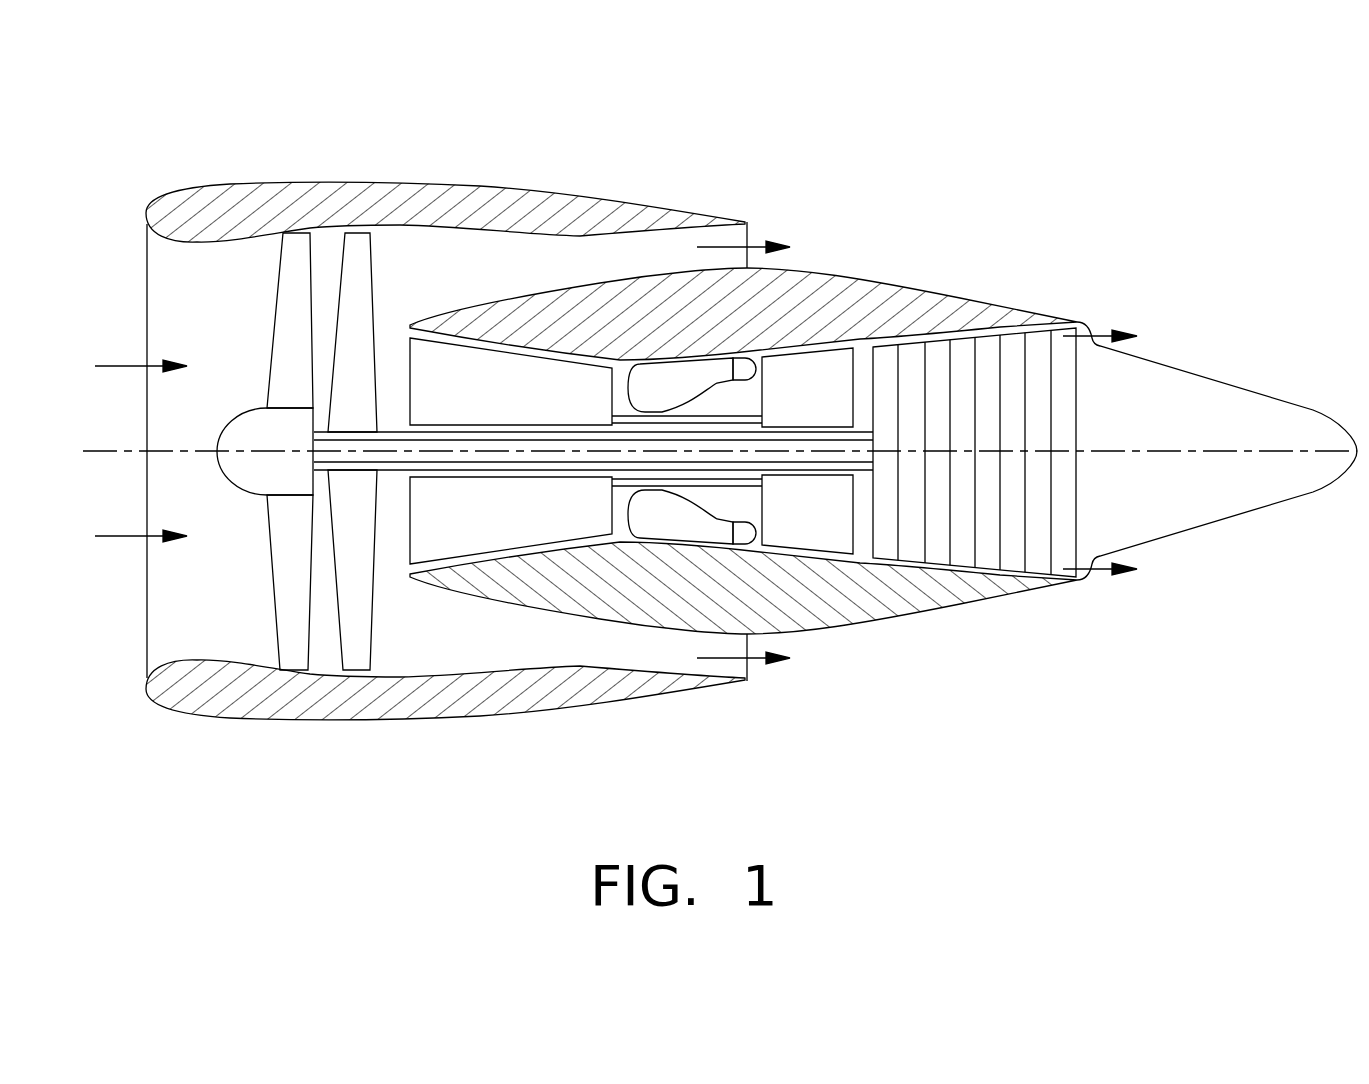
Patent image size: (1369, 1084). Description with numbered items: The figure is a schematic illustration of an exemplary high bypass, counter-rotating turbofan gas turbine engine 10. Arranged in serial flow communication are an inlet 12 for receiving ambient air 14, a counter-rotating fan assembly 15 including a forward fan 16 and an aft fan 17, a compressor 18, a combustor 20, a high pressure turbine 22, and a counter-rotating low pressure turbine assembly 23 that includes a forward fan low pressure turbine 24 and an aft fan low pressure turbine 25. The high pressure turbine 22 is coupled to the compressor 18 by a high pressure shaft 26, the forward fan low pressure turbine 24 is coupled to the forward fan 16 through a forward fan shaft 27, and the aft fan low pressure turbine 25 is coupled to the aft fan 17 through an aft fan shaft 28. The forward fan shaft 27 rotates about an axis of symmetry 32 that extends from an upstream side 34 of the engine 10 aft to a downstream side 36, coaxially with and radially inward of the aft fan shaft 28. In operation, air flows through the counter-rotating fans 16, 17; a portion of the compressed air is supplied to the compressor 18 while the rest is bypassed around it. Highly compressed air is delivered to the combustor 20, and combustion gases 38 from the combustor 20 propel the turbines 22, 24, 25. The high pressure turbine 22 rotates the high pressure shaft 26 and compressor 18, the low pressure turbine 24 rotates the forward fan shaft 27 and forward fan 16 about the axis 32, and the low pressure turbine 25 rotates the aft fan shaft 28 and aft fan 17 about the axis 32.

The gas turbine engine 10 is at (702, 444).
The inlet 12 is at (155, 238).
The ambient air 14 is at (120, 363).
The counter-rotating fan assembly 15 is at (260, 598).
The forward fan 16 is at (285, 300).
The aft fan 17 is at (380, 297).
The compressor 18 is at (434, 357).
The combustor 20 is at (670, 370).
The high pressure turbine 22 is at (802, 363).
The counter-rotating low pressure turbine assembly 23 is at (1100, 300).
The forward fan low pressure turbine 24 is at (892, 353).
The aft fan low pressure turbine 25 is at (890, 547).
The high pressure shaft 26 is at (620, 410).
The forward fan shaft 27 is at (430, 437).
The aft fan shaft 28 is at (503, 477).
The axis of symmetry 32 is at (187, 450).
The upstream side 34 is at (248, 751).
The downstream side 36 is at (1138, 611).
The combustion gases 38 is at (747, 372).